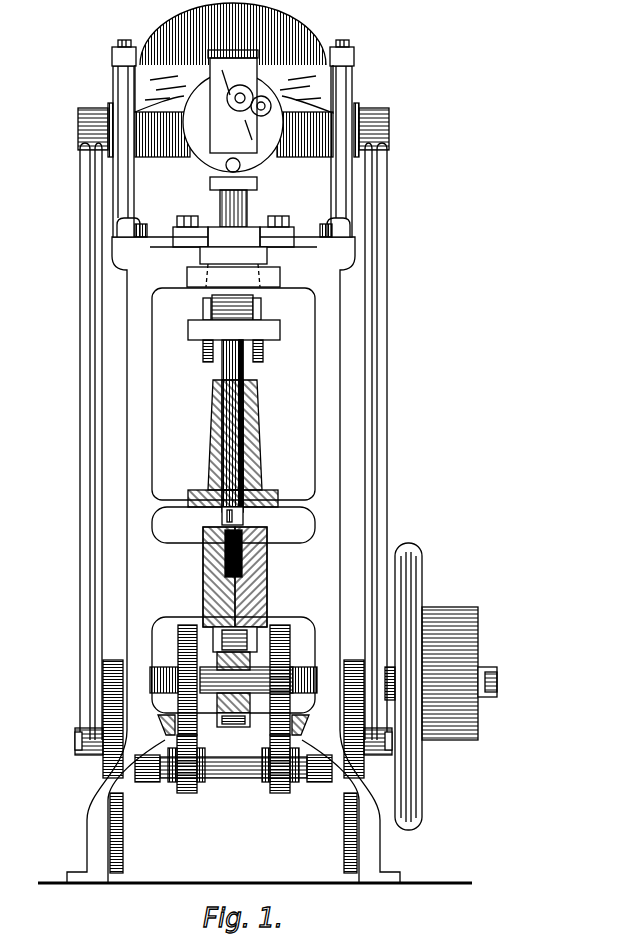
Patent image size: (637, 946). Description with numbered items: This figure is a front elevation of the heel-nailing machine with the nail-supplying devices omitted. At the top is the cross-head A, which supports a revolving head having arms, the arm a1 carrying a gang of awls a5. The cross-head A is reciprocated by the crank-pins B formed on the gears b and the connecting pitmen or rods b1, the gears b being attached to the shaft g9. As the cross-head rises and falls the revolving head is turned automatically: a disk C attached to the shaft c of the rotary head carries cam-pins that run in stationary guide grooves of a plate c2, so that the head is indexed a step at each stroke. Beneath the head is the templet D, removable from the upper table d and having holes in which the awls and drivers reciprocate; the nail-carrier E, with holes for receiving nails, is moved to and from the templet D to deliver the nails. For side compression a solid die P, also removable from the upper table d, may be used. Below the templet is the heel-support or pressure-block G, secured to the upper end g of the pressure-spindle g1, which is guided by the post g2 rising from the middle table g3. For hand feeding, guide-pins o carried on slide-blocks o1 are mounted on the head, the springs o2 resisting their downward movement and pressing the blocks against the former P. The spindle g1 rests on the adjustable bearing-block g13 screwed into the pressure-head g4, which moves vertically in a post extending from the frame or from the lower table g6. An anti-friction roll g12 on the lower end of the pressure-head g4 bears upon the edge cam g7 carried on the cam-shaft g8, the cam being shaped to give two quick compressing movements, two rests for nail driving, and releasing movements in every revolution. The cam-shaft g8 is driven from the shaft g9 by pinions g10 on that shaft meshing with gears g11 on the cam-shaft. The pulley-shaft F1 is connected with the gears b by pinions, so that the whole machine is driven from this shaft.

The cross-head A is at (175, 30).
The disk C is at (214, 158).
The shaft of the rotary head c is at (223, 133).
The arm a1 is at (262, 150).
The plate c2 is at (222, 183).
The awls a5 is at (249, 206).
The nail-carrier E is at (233, 231).
The templet D is at (233, 255).
The solid die P is at (233, 275).
The upper table d is at (233, 461).
The guide-pins o is at (262, 308).
The slide-blocks o1 is at (203, 308).
The heel-support or pressure-block G is at (234, 330).
The springs o2 is at (286, 358).
The post g2 is at (262, 452).
The pressure-spindle g1 is at (258, 393).
The middle table g3 is at (272, 496).
The adjustable bearing-block g13 is at (245, 516).
The pressure-head g4 is at (244, 588).
The upper end of the pressure-spindle g is at (205, 575).
The anti-friction roll g12 is at (260, 628).
The shaft g9 is at (233, 778).
The edge cam g7 is at (223, 727).
The gears g11 is at (291, 641).
The cam-shaft g8 is at (177, 702).
The lower table g6 is at (303, 730).
The pinions g10 is at (277, 793).
The gears b is at (352, 660).
The connecting pitmen or rods b1 is at (394, 398).
The crank-pins B is at (80, 746).
The pulley-shaft F1 is at (488, 674).